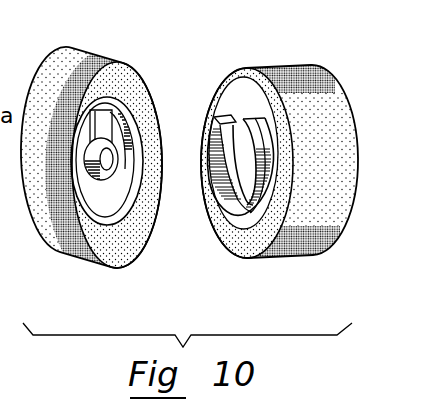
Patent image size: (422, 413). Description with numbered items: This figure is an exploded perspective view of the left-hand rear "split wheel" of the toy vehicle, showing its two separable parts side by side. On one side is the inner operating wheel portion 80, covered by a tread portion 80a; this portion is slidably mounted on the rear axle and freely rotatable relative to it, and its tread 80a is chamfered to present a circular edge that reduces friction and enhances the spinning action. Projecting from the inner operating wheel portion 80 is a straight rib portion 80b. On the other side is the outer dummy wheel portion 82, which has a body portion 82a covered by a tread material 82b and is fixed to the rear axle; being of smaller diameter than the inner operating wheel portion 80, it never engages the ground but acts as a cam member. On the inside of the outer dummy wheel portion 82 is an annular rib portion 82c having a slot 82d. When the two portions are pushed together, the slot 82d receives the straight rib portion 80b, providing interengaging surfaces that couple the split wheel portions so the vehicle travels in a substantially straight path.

The inner operating wheel portion 80 is at (112, 50).
The tread portion 80a is at (96, 273).
The straight rib portion 80b is at (109, 117).
The outer dummy wheel portion 82 is at (231, 254).
The body portion 82a is at (283, 218).
The tread material 82b is at (268, 258).
The annular rib portion 82c is at (262, 141).
The slot 82d is at (241, 122).